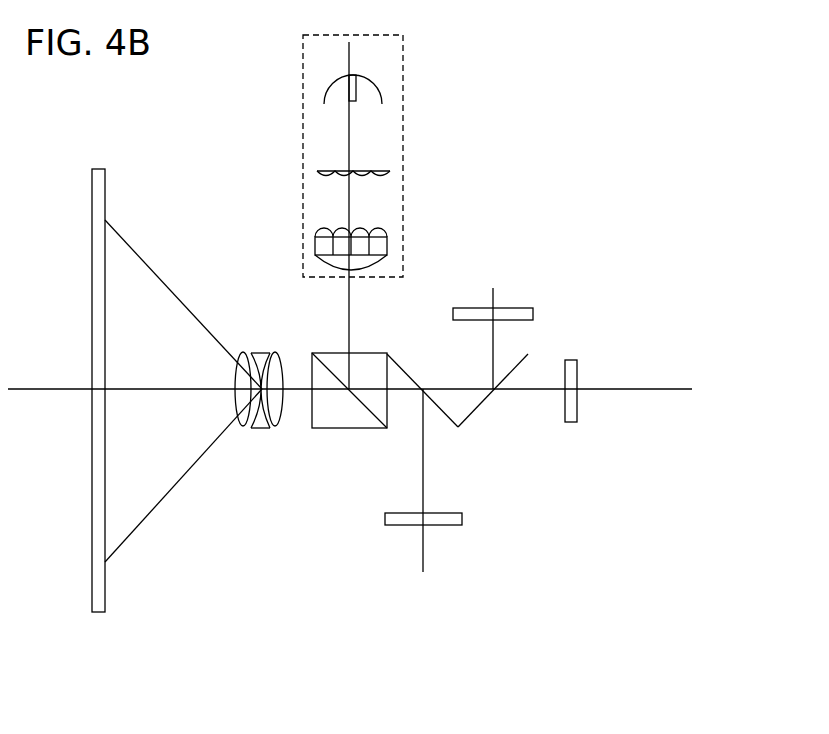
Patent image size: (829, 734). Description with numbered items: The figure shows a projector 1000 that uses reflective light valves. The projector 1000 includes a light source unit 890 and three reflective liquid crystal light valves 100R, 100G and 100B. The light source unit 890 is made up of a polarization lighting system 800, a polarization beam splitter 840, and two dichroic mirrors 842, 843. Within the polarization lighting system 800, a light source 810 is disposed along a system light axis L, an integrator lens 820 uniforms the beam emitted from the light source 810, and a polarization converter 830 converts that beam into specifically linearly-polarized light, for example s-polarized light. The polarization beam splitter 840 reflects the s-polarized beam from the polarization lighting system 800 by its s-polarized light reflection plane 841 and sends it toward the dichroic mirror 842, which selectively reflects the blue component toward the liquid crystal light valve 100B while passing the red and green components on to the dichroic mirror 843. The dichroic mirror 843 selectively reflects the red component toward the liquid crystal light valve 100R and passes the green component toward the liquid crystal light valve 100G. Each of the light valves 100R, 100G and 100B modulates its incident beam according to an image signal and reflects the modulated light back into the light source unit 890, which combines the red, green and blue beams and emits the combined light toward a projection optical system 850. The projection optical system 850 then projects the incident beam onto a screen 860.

The polarization lighting system 800 is at (403, 63).
The light source 810 is at (378, 80).
The integrator lens 820 is at (388, 172).
The polarization converter 830 is at (387, 240).
The polarization beam splitter 840 is at (320, 425).
The s-polarized light reflection plane 841 is at (365, 425).
The dichroic mirror 842 is at (445, 428).
The dichroic mirror 843 is at (482, 406).
The projection optical system 850 is at (282, 338).
The screen 860 is at (98, 586).
The light source unit 890 is at (253, 220).
The liquid crystal light valve 100R is at (520, 308).
The liquid crystal light valve 100G is at (573, 408).
The liquid crystal light valve 100B is at (400, 519).
The projector 1000 is at (630, 349).
The system light axis L is at (349, 57).